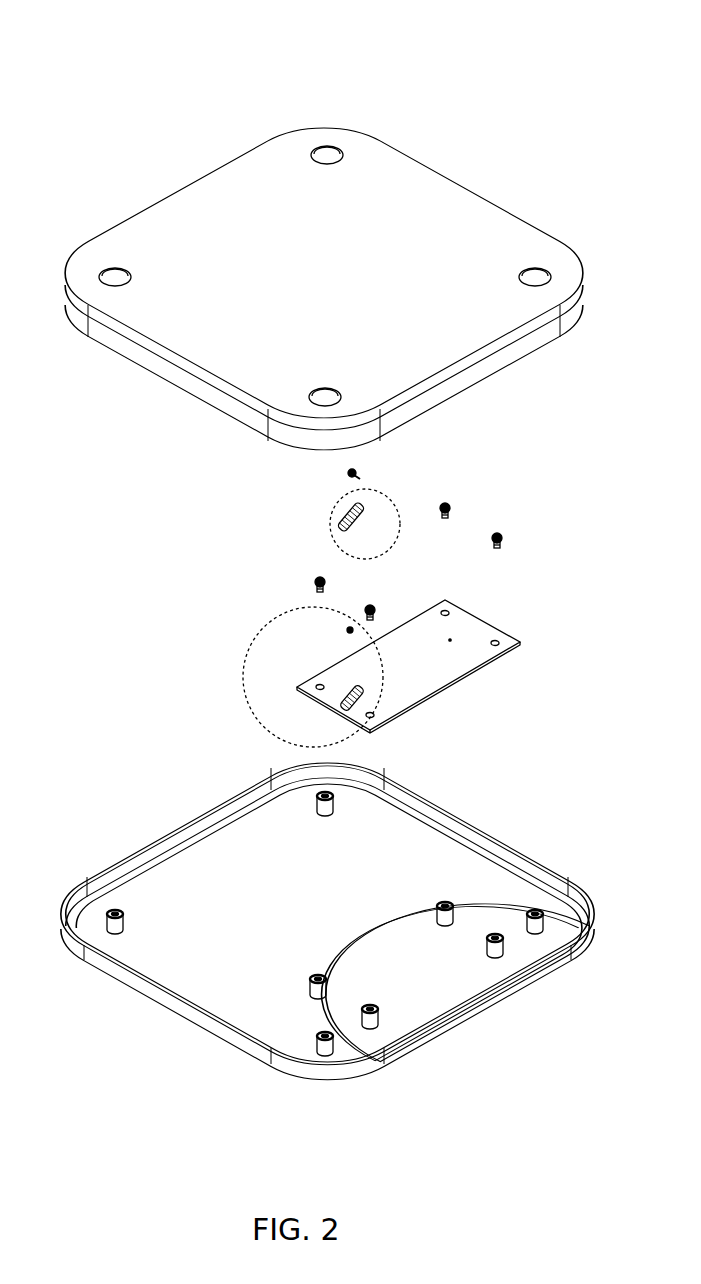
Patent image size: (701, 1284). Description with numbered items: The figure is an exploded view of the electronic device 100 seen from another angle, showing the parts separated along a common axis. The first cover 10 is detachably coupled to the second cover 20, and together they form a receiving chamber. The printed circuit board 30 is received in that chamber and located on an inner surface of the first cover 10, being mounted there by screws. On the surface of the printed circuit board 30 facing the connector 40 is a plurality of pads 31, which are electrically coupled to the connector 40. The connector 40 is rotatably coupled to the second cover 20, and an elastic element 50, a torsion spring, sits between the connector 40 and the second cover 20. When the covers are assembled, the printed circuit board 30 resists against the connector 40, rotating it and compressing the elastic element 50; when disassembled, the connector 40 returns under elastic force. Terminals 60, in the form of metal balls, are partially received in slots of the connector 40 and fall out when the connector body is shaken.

The electronic device 100 is at (377, 36).
The first cover 10 is at (443, 1003).
The second cover 20 is at (497, 327).
The printed circuit board 30 is at (470, 660).
The pads 31 is at (323, 702).
The connector 40 is at (332, 512).
The elastic element 50 is at (357, 475).
The terminals 60 is at (351, 631).